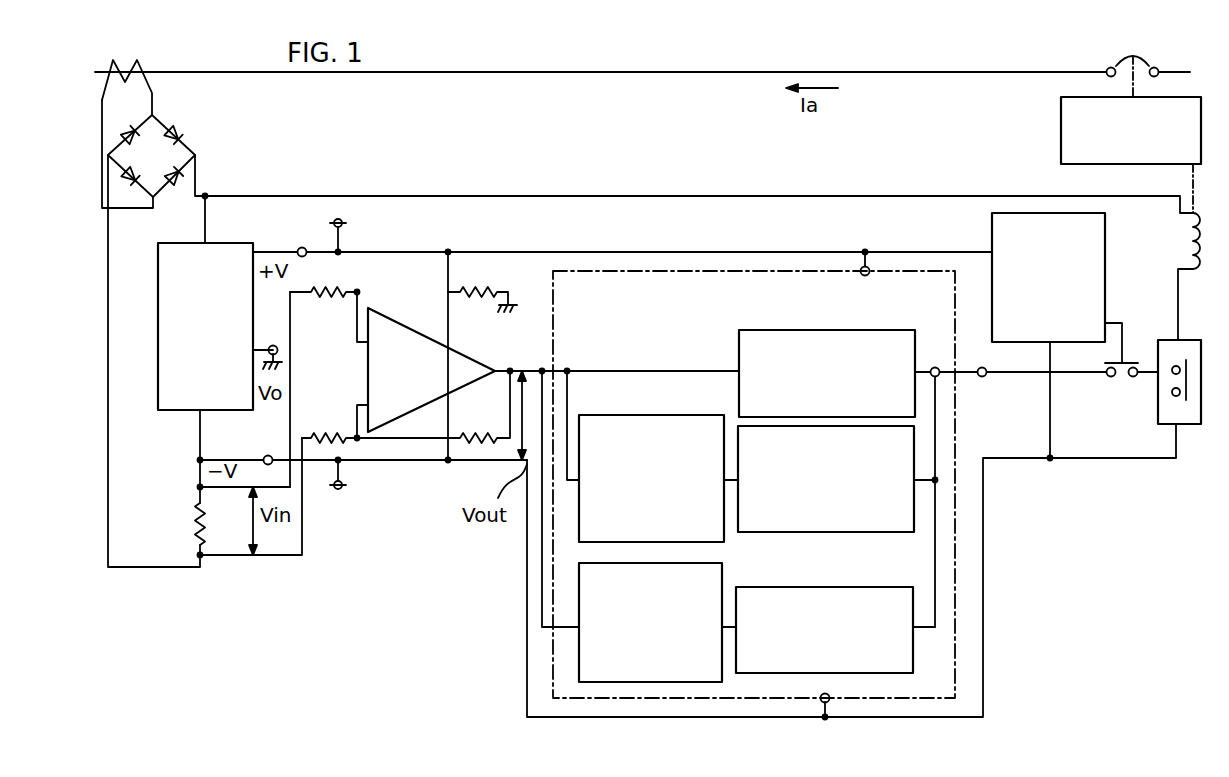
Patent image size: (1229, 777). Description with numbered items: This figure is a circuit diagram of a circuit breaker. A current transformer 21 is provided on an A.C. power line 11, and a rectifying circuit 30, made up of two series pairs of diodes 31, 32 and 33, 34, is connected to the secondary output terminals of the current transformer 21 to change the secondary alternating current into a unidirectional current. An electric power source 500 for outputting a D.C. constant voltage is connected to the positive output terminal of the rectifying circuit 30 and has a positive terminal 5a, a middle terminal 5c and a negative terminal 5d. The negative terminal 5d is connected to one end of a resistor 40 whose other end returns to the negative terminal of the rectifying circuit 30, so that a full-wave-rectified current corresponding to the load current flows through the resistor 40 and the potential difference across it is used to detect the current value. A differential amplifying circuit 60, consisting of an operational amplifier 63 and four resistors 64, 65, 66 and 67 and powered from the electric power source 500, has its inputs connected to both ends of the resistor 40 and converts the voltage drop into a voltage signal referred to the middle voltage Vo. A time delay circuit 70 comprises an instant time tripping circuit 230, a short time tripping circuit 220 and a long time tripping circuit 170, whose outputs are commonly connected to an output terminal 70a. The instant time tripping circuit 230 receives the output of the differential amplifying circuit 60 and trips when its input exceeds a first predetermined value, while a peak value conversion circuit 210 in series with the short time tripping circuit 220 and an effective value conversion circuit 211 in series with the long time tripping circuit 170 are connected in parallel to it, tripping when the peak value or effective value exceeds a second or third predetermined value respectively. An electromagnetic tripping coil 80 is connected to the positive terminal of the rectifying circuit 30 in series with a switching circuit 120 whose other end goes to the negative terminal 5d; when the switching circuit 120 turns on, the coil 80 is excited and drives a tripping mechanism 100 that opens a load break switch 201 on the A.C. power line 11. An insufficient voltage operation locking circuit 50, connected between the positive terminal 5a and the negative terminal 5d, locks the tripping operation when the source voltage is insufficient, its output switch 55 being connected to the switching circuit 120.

The A.C. power line 11 is at (640, 72).
The current transformer 21 is at (138, 62).
The rectifying circuit 30 is at (173, 164).
The diode 31 is at (125, 134).
The diode 32 is at (178, 133).
The diode 33 is at (130, 182).
The diode 34 is at (192, 170).
The resistor 40 is at (197, 520).
The insufficient voltage operation locking circuit 50 is at (992, 233).
The output switch 55 is at (1122, 378).
The differential amplifying circuit 60 is at (422, 328).
The operational amplifier 63 is at (457, 371).
The resistor 64 is at (323, 295).
The resistor 65 is at (493, 288).
The resistor 66 is at (329, 426).
The resistor 67 is at (433, 407).
The time delay circuit 70 is at (737, 271).
The output terminal 70a is at (981, 367).
The electromagnetic tripping coil 80 is at (1188, 236).
The tripping mechanism 100 is at (1061, 131).
The switching circuit 120 is at (1190, 425).
The long time tripping circuit 170 is at (795, 587).
The load break switch 201 is at (1106, 60).
The peak value conversion circuit 210 is at (630, 415).
The effective value conversion circuit 211 is at (704, 563).
The short time tripping circuit 220 is at (805, 532).
The instant time tripping circuit 230 is at (798, 330).
The electric power source 500 is at (158, 331).
The positive terminal 5a is at (304, 247).
The middle terminal 5c is at (279, 350).
The negative terminal 5d is at (270, 465).